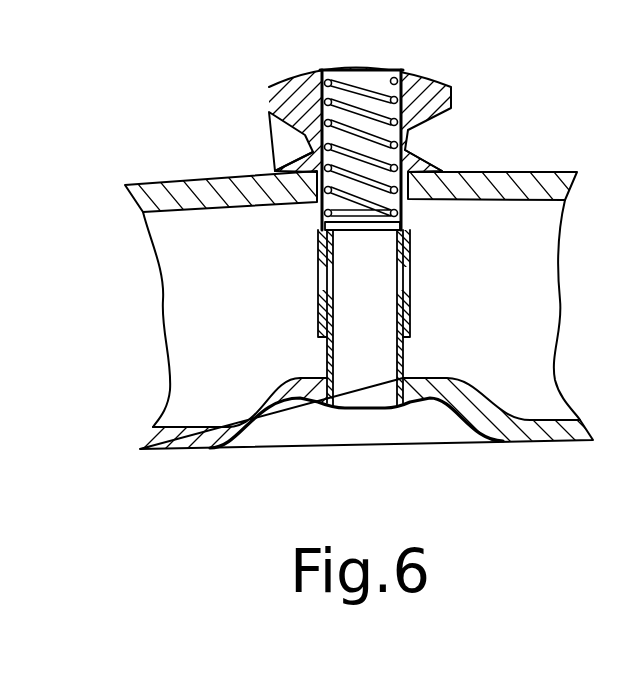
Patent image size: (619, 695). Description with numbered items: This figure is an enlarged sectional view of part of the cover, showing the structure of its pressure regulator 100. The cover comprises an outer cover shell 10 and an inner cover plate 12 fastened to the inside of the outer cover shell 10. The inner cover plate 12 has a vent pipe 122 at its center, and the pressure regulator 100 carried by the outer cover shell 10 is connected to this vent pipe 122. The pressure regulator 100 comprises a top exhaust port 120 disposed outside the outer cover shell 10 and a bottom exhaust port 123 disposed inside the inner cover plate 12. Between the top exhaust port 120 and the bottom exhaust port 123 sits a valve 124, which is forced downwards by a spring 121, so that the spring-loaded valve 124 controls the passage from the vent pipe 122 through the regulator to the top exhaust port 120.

The outer cover shell 10 is at (524, 186).
The inner cover plate 12 is at (173, 432).
The pressure regulator 100 is at (305, 103).
The top exhaust port 120 is at (415, 77).
The spring 121 is at (410, 148).
The vent pipe 122 is at (327, 352).
The bottom exhaust port 123 is at (402, 278).
The valve 124 is at (362, 223).